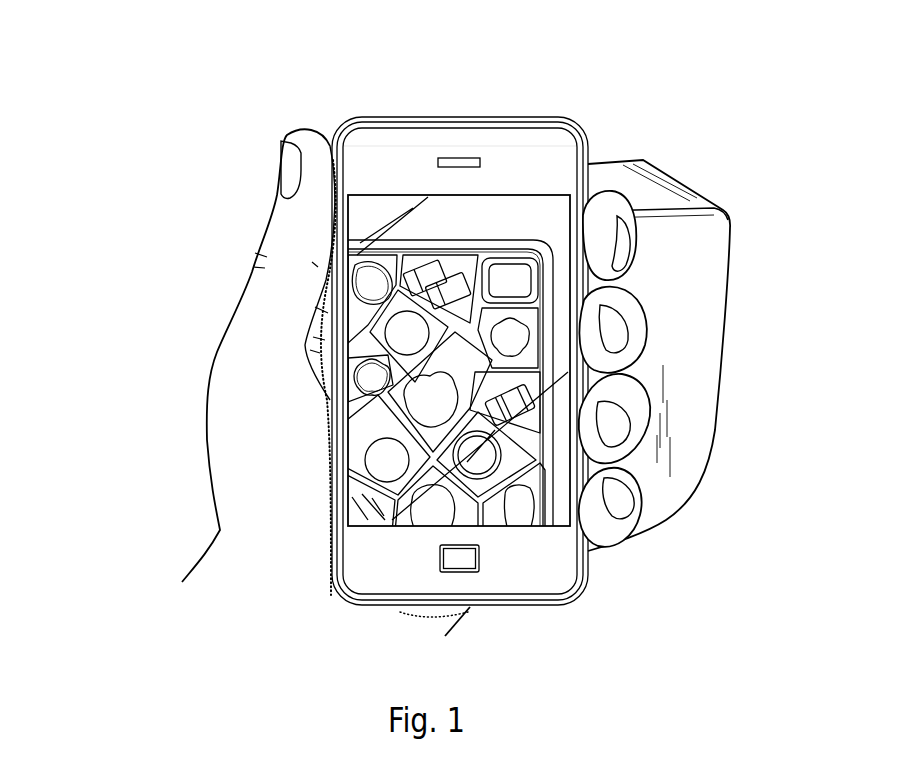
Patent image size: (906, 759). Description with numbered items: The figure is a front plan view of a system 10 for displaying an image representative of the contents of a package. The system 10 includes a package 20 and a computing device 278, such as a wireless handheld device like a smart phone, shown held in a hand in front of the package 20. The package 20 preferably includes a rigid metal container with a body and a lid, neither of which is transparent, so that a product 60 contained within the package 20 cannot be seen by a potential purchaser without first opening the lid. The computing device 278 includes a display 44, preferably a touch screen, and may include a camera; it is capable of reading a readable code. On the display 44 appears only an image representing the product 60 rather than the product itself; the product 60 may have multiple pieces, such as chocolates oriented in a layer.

The system 10 is at (643, 92).
The package 20 is at (698, 195).
The display 44 is at (528, 527).
The product 60 is at (380, 460).
The computing device 278 is at (414, 147).